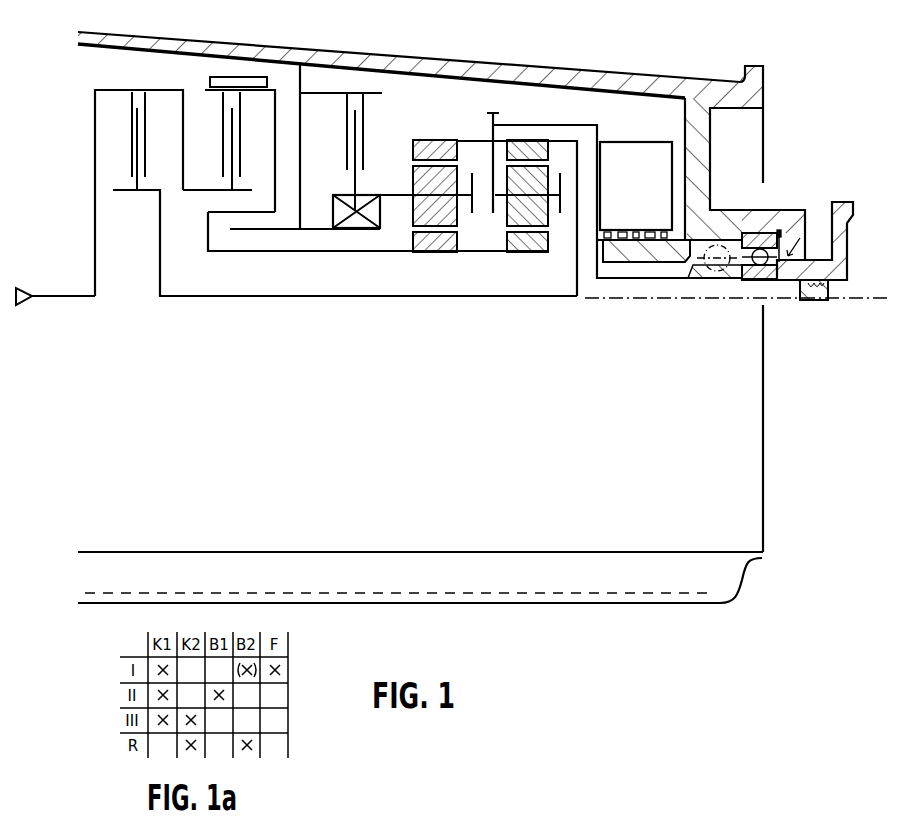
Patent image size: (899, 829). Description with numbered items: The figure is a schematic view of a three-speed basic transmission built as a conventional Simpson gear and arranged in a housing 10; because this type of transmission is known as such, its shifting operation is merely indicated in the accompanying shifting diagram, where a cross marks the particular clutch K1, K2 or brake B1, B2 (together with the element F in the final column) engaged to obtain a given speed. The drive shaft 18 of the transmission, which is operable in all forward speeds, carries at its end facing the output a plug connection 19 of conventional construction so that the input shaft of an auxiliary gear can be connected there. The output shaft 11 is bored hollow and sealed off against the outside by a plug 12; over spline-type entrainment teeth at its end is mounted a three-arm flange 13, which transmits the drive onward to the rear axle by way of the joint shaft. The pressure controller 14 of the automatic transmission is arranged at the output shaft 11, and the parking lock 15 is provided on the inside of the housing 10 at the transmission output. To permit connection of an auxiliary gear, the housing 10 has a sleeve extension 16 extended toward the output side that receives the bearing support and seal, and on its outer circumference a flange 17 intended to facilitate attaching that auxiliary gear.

The housing 10 is at (530, 76).
The output shaft 11 is at (658, 274).
The plug 12 is at (815, 301).
The three-arm flange 13 is at (850, 236).
The pressure controller 14 is at (638, 151).
The parking lock 15 is at (490, 112).
The sleeve extension 16 is at (786, 226).
The flange 17 is at (758, 63).
The drive shaft 18 is at (360, 298).
The plug connection 19 is at (575, 298).
The clutch K1 is at (148, 141).
The clutch K2 is at (229, 151).
The brake B1 is at (215, 82).
The brake B2 is at (346, 146).
The free-wheel (one-way clutch) F is at (345, 211).